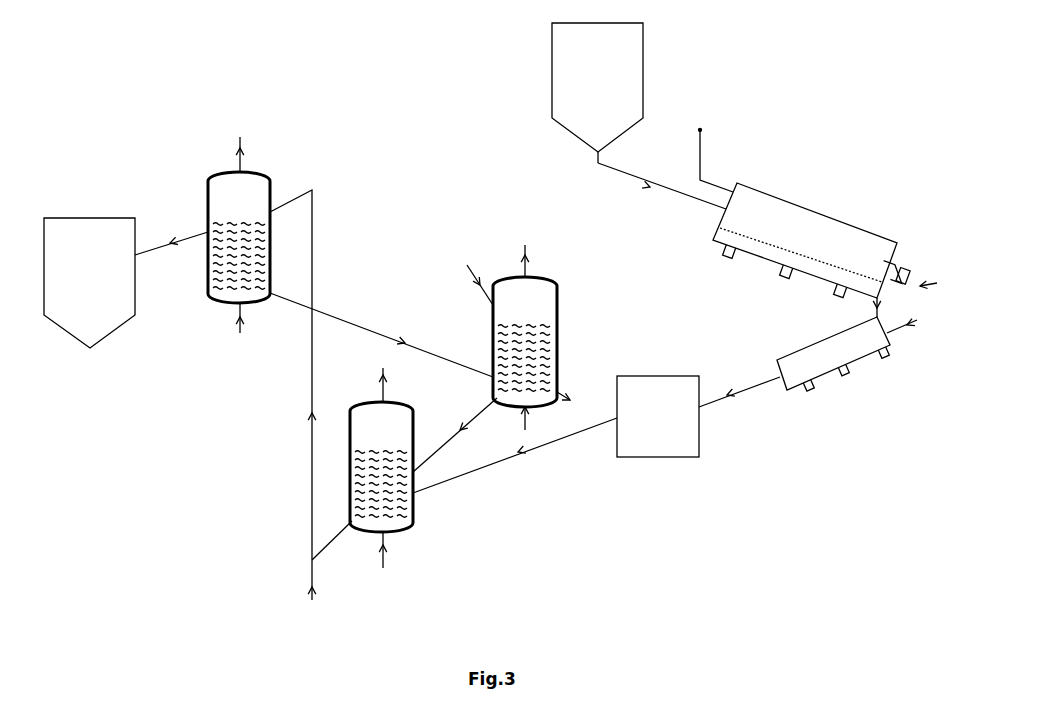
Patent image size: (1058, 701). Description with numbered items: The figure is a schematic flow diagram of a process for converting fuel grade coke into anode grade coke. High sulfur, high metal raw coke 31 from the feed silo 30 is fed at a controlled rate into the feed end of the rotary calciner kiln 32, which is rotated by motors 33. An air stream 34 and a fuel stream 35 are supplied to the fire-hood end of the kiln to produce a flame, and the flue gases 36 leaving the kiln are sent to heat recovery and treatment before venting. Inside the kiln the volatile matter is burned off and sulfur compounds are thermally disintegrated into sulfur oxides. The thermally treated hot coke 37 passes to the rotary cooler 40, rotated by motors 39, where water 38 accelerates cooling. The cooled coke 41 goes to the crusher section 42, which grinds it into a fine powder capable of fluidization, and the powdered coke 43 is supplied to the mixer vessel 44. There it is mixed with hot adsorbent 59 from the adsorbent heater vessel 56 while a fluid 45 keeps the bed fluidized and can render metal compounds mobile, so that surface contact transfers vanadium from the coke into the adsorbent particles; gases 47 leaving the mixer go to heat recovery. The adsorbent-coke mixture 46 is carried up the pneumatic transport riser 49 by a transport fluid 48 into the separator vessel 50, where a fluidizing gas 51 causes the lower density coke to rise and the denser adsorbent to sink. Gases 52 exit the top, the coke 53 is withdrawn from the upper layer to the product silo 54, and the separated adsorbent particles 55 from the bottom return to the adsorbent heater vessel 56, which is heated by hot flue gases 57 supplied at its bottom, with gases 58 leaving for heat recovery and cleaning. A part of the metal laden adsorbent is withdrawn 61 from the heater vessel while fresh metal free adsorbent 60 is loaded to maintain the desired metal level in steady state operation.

The feed silo 30 is at (644, 70).
The raw coke 31 is at (687, 195).
The rotary calciner kiln 32 is at (790, 204).
The motors 33 is at (731, 253).
The air stream 34 is at (913, 262).
The fuel stream 35 is at (935, 284).
The flue gases 36 is at (701, 158).
The thermally treated hot coke 37 is at (878, 310).
The water 38 is at (912, 329).
The motors 39 is at (846, 373).
The rotary cooler 40 is at (820, 341).
The cooled coke 41 is at (757, 385).
The crusher section 42 is at (699, 427).
The powdered coke 43 is at (578, 431).
The mixer vessel 44 is at (410, 406).
The fluid 45 is at (384, 558).
The adsorbent-coke mixture 46 is at (323, 549).
The gases 47 is at (384, 385).
The transport fluid 48 is at (313, 580).
The pneumatic transport riser 49 is at (313, 365).
The separator vessel 50 is at (266, 178).
The fluidizing gas 51 is at (246, 327).
The gases 52 is at (241, 152).
The coke 53 is at (183, 239).
The product silo 54 is at (137, 262).
The separated adsorbent particles 55 is at (360, 327).
The adsorbent heater vessel 56 is at (558, 310).
The hot flue gases 57 is at (526, 417).
The gases 58 is at (526, 260).
The hot adsorbent 59 is at (425, 461).
The fresh adsorbent 60 is at (477, 273).
The metal laden adsorbent withdrawal 61 is at (577, 389).